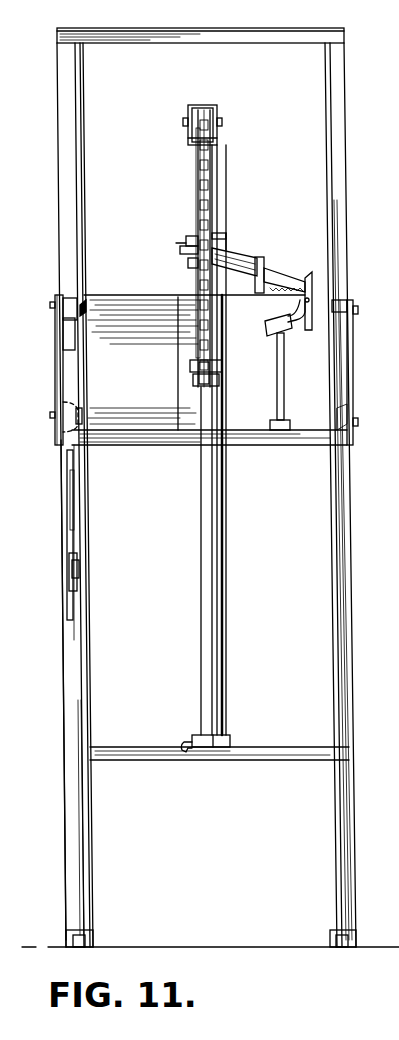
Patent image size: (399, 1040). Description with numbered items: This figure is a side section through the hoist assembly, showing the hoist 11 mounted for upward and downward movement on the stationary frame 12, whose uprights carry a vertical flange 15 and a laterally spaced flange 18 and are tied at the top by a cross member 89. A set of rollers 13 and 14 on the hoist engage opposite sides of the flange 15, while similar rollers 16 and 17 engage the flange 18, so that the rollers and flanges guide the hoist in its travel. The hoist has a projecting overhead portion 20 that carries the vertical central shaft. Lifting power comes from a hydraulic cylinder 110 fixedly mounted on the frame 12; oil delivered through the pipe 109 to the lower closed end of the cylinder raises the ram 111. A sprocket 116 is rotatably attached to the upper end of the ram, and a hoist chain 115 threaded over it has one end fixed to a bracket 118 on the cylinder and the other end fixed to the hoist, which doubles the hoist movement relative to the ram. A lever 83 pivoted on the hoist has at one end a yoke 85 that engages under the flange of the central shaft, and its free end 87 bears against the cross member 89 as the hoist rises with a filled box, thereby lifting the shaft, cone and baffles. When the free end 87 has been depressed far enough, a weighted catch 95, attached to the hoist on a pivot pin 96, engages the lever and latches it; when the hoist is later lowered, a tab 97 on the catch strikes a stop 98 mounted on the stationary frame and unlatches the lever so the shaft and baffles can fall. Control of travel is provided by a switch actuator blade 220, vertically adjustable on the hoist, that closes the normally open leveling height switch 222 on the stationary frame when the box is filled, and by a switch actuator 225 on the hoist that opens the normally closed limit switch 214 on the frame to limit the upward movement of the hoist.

The cross member 89 is at (291, 38).
The vertical flange 15 is at (62, 204).
The flange 18 is at (345, 230).
The stationary frame 12 is at (82, 257).
The projecting overhead portion 20 is at (159, 285).
The hydraulic cylinder 110 is at (223, 572).
The ram 111 is at (197, 178).
The hoist chain 115 is at (197, 200).
The sprocket 116 is at (205, 106).
The yoke 85 is at (186, 250).
The lever 83 is at (228, 257).
The free end 87 is at (280, 274).
The pivot pin 96 is at (307, 328).
The weighted catch 95 is at (290, 316).
The tab 97 is at (265, 327).
The stop 98 is at (277, 371).
The bracket 118 is at (190, 382).
The hoist 11 is at (184, 364).
The roller 13 is at (84, 304).
The limit switch 214 is at (66, 324).
The leveling height switch 222 is at (68, 341).
The roller 14 is at (60, 412).
The switch actuator 225 is at (72, 491).
The switch actuator blade 220 is at (70, 563).
The roller 16 is at (336, 303).
The roller 17 is at (340, 412).
The pipe 109 is at (184, 742).